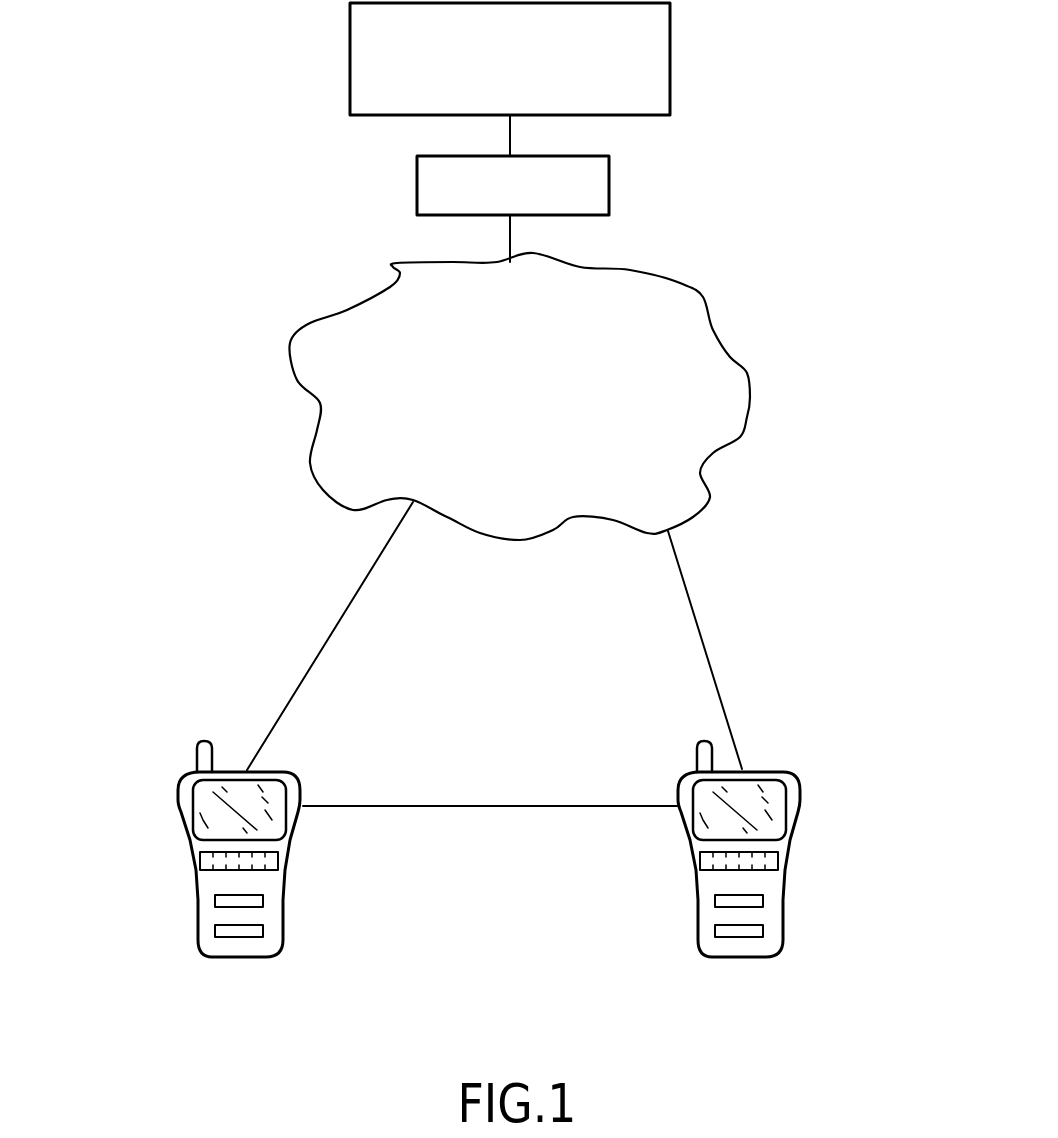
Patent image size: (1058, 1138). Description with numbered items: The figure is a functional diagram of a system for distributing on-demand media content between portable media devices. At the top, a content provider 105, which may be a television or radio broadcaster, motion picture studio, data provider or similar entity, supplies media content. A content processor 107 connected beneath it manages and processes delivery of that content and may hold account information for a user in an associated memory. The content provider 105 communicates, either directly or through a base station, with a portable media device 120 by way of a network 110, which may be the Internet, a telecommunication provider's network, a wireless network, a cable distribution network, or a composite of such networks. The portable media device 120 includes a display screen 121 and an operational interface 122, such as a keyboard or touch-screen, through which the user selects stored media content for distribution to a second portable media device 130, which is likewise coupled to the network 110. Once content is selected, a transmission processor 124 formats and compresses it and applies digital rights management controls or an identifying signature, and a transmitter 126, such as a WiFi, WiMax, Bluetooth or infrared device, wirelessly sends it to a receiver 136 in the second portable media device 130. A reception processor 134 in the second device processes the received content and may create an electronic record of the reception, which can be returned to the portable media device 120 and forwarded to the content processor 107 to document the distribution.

The content provider 105 is at (670, 52).
The content processor 107 is at (609, 188).
The network 110 is at (750, 383).
The portable media device 120 is at (240, 849).
The display screen 121 is at (287, 792).
The operational interface 122 is at (280, 855).
The transmission processor 124 is at (263, 902).
The transmitter 126 is at (263, 930).
The second portable media device 130 is at (757, 849).
The reception processor 134 is at (717, 900).
The receiver 136 is at (717, 930).